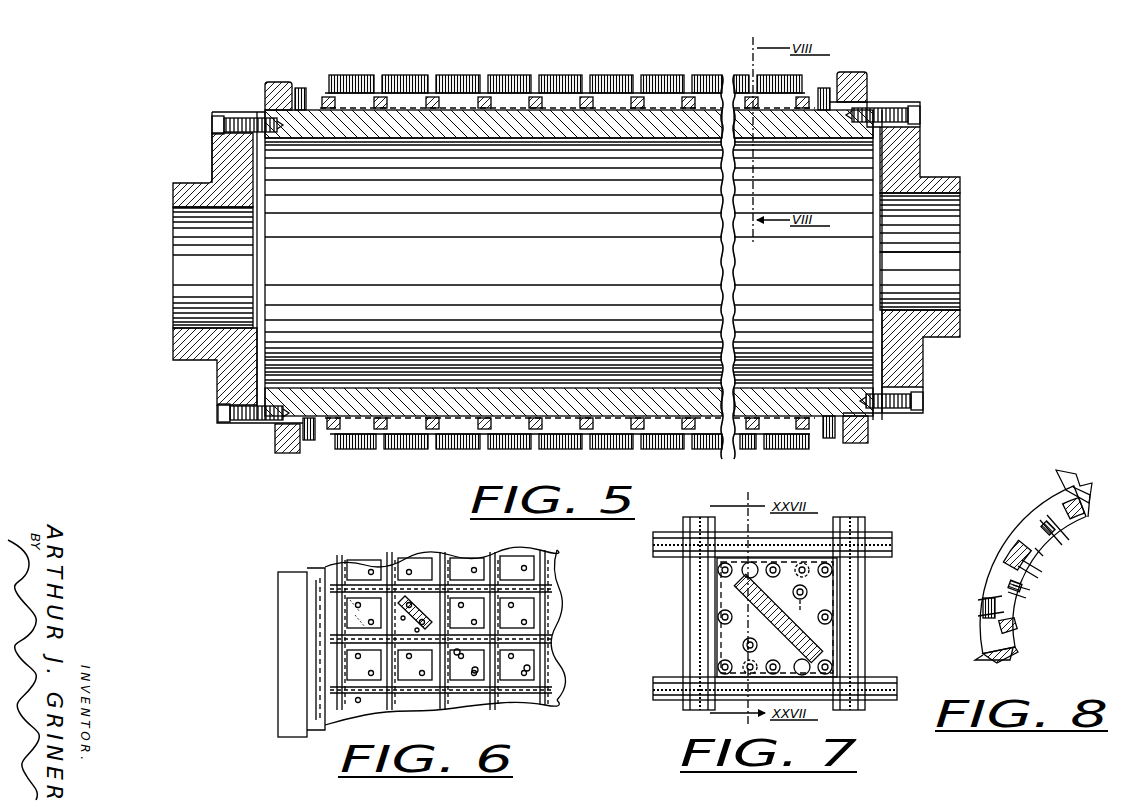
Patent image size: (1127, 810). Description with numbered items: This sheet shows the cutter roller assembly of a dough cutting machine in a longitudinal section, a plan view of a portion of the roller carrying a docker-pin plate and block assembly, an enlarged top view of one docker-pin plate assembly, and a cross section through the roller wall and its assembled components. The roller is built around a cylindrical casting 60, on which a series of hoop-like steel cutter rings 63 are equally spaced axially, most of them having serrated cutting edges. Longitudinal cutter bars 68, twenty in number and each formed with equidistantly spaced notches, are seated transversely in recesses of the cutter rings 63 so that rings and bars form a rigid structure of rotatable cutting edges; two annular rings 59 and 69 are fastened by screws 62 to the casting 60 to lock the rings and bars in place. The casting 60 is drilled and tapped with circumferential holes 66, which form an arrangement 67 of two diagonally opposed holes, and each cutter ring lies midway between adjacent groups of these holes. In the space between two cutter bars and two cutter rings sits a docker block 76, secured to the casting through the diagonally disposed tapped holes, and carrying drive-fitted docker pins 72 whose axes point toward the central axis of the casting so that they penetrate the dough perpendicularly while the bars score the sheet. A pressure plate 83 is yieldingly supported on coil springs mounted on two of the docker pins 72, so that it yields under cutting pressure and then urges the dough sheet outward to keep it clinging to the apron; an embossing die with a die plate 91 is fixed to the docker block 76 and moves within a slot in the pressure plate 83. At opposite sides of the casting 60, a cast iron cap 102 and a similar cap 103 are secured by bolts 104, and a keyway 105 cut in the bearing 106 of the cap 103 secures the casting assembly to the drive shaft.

In FIG. 5, the annular ring 59 is at (265, 83).
In FIG. 6, the annular ring 59 is at (278, 618).
In FIG. 5, the casting 60 is at (285, 423).
In FIG. 5, the screws 62 is at (300, 88).
In FIG. 5, the cutter rings 63 is at (332, 103).
In FIG. 6, the cutter rings 63 is at (441, 611).
In FIG. 7, the cutter rings 63 is at (690, 626).
In FIG. 8, the cutter rings 63 is at (992, 652).
In FIG. 6, the holes 66 is at (521, 565).
In FIG. 6, the arrangement of two diagonally-opposed holes 67 is at (526, 670).
In FIG. 5, the cutter bar 68 is at (383, 83).
In FIG. 6, the cutter bar 68 is at (465, 630).
In FIG. 7, the cutter bar 68 is at (878, 532).
In FIG. 8, the cutter bar 68 is at (1063, 500).
In FIG. 5, the annular ring 69 is at (866, 73).
In FIG. 6, the docker pins 72 is at (425, 600).
In FIG. 7, the docker pins 72 is at (675, 598).
In FIG. 8, the docker pins 72 is at (996, 570).
In FIG. 8, the docker block 76 is at (1020, 573).
In FIG. 6, the pressure plate 83 is at (402, 610).
In FIG. 7, the pressure plate 83 is at (725, 655).
In FIG. 8, the die plate 91 is at (985, 608).
In FIG. 5, the cast iron cap 102 is at (233, 180).
In FIG. 5, the cap 103 is at (905, 150).
In FIG. 5, the bolts 104 is at (213, 121).
In FIG. 5, the keyway 105 is at (950, 200).
In FIG. 5, the bearing 106 is at (950, 300).